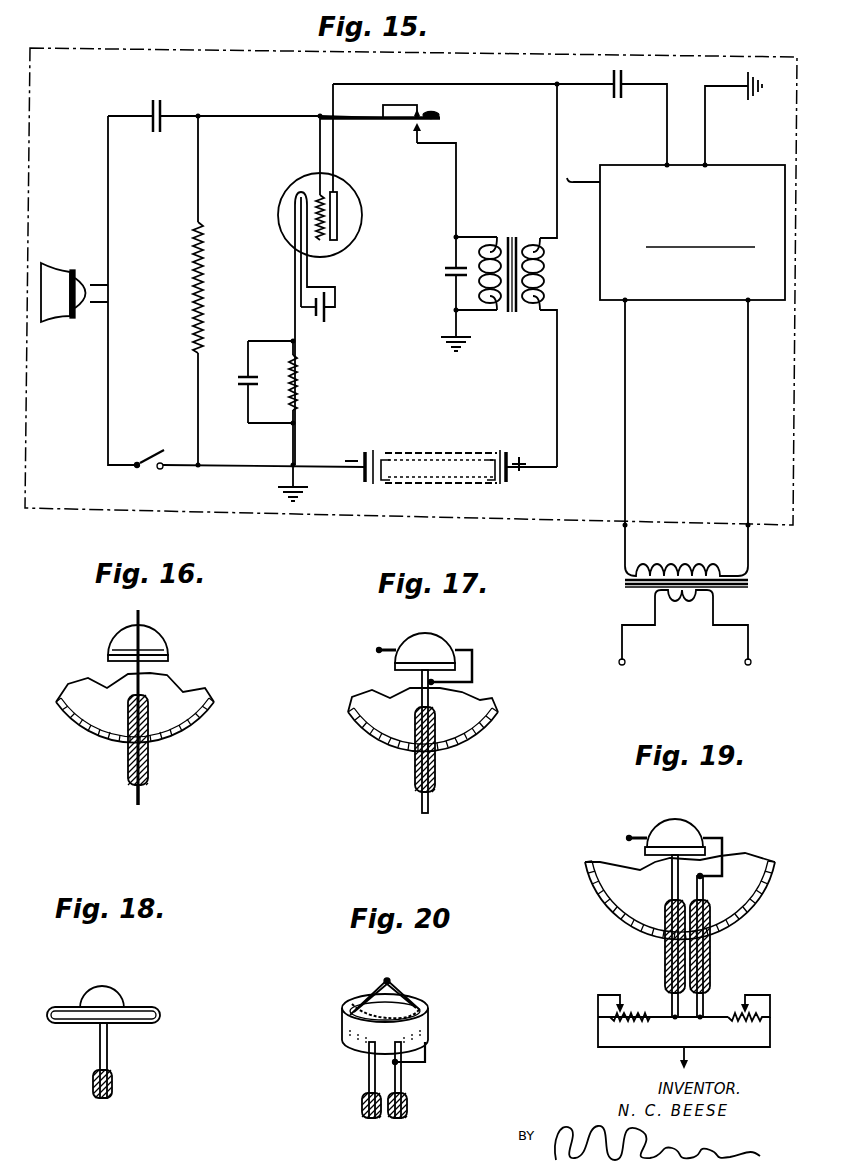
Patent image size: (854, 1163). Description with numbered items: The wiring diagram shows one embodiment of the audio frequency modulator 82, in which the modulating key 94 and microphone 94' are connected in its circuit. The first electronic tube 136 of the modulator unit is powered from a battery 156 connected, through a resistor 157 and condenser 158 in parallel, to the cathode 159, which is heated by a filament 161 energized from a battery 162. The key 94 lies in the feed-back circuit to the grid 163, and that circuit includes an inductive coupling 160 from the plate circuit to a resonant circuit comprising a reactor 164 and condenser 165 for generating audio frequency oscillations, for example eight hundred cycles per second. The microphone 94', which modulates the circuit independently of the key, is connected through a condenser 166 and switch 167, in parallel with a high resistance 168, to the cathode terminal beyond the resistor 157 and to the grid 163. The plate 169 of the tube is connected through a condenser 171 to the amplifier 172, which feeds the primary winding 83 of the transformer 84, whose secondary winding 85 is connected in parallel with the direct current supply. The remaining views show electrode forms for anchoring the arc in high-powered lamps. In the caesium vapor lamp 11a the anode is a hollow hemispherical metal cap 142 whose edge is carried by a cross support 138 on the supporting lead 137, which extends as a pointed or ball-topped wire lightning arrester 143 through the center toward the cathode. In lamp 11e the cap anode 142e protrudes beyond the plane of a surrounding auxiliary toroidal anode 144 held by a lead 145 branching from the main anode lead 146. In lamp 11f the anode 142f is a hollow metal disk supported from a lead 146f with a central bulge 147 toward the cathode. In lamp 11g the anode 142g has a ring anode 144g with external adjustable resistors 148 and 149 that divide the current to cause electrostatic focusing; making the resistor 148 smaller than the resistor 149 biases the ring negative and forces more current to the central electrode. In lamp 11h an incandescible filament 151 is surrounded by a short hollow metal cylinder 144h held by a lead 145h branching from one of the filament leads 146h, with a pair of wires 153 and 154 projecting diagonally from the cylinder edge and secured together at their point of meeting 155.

In FIG. 15, the audio frequency modulator 82 is at (170, 46).
In FIG. 15, the condenser 166 is at (162, 108).
In FIG. 15, the microphone 94' is at (74, 278).
In FIG. 15, the high resistance 168 is at (196, 264).
In FIG. 15, the switch 167 is at (147, 458).
In FIG. 15, the condenser 158 is at (246, 380).
In FIG. 15, the resistor 157 is at (300, 384).
In FIG. 15, the battery 156 is at (387, 455).
In FIG. 15, the first electronic tube 136 is at (281, 213).
In FIG. 15, the cathode 159 is at (297, 198).
In FIG. 15, the filament 161 is at (310, 243).
In FIG. 15, the battery 162 is at (327, 316).
In FIG. 15, the grid 163 is at (318, 193).
In FIG. 15, the plate 169 is at (337, 218).
In FIG. 15, the modulating key 94 is at (380, 143).
In FIG. 15, the condenser 171 is at (610, 96).
In FIG. 15, the amplifier 172 is at (602, 302).
In FIG. 15, the condenser 165 is at (444, 272).
In FIG. 15, the reactor 164 is at (497, 237).
In FIG. 15, the inductive coupling 160 is at (511, 282).
In FIG. 15, the primary winding 83 is at (625, 567).
In FIG. 15, the transformer 84 is at (625, 584).
In FIG. 15, the secondary winding 85 is at (680, 612).
In FIG. 16, the caesium vapor lamp 11a is at (190, 733).
In FIG. 16, the metal cap 142 is at (168, 642).
In FIG. 16, the cross support 138 is at (115, 661).
In FIG. 16, the wire lightning arrester 143 is at (142, 614).
In FIG. 16, the supporting lead 137 is at (131, 795).
In FIG. 17, the caesium vapor lamp 11e is at (378, 741).
In FIG. 17, the anode 142e is at (442, 646).
In FIG. 17, the auxiliary toroidal anode 144 is at (396, 648).
In FIG. 17, the lead 145 is at (473, 670).
In FIG. 17, the main anode lead 146 is at (428, 807).
In FIG. 19, the main anode lead 146 is at (670, 884).
In FIG. 18, the anode 142f is at (163, 1016).
In FIG. 18, the central bulge 147 is at (122, 996).
In FIG. 18, the lead 146f is at (108, 1054).
In FIG. 18, the caesium vapor lamp 11f is at (113, 1089).
In FIG. 19, the caesium vapor lamp 11g is at (620, 918).
In FIG. 19, the anode 142g is at (700, 830).
In FIG. 19, the auxiliary toroidal anode 144g is at (640, 832).
In FIG. 19, the adjustable resistor 148 is at (636, 1010).
In FIG. 19, the adjustable resistor 149 is at (735, 1010).
In FIG. 20, the hollow metal cylinder 144h is at (428, 1022).
In FIG. 20, the incandescible filament 151 is at (422, 1010).
In FIG. 20, the wire 153 is at (360, 997).
In FIG. 20, the wire 154 is at (402, 992).
In FIG. 20, the point of meeting 155 is at (387, 980).
In FIG. 20, the filament lead 146h is at (403, 1083).
In FIG. 20, the lead 145h is at (426, 1063).
In FIG. 20, the caesium vapor lamp 11h is at (362, 1107).